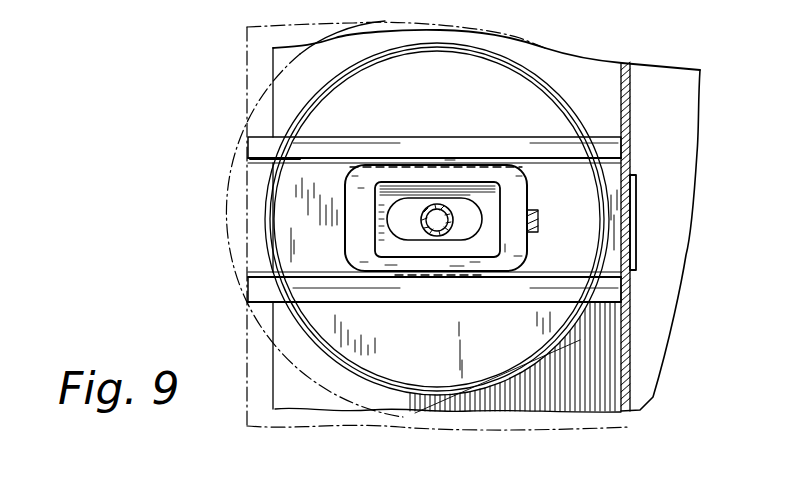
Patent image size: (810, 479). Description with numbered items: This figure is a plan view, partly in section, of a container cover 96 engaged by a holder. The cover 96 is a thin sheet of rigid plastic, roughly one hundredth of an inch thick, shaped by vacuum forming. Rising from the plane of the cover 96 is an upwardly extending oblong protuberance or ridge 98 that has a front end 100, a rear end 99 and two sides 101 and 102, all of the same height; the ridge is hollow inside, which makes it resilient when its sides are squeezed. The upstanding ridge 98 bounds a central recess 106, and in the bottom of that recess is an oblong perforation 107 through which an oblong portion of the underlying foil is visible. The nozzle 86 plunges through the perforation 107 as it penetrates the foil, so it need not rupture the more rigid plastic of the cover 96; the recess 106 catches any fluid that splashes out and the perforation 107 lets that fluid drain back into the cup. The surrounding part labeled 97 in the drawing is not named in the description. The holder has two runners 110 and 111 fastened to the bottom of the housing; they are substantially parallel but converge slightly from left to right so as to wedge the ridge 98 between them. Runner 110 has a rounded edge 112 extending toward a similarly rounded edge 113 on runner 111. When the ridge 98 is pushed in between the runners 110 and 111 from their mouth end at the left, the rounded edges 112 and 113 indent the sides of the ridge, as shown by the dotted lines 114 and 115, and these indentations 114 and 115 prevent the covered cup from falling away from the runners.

The nozzle 86 is at (430, 236).
The cover 96 is at (287, 211).
The housing 97 is at (540, 77).
The oblong protuberance or ridge 98 is at (538, 194).
The rear end 99 is at (512, 248).
The front end 100 is at (345, 241).
The side 101 is at (395, 167).
The side 102 is at (482, 265).
The central recess 106 is at (487, 180).
The oblong perforation 107 is at (418, 198).
The runner 110 is at (257, 144).
The runner 111 is at (260, 293).
The rounded edge 112 is at (263, 161).
The rounded edge 113 is at (258, 275).
The indentation 114 is at (443, 277).
The indentation 115 is at (453, 160).